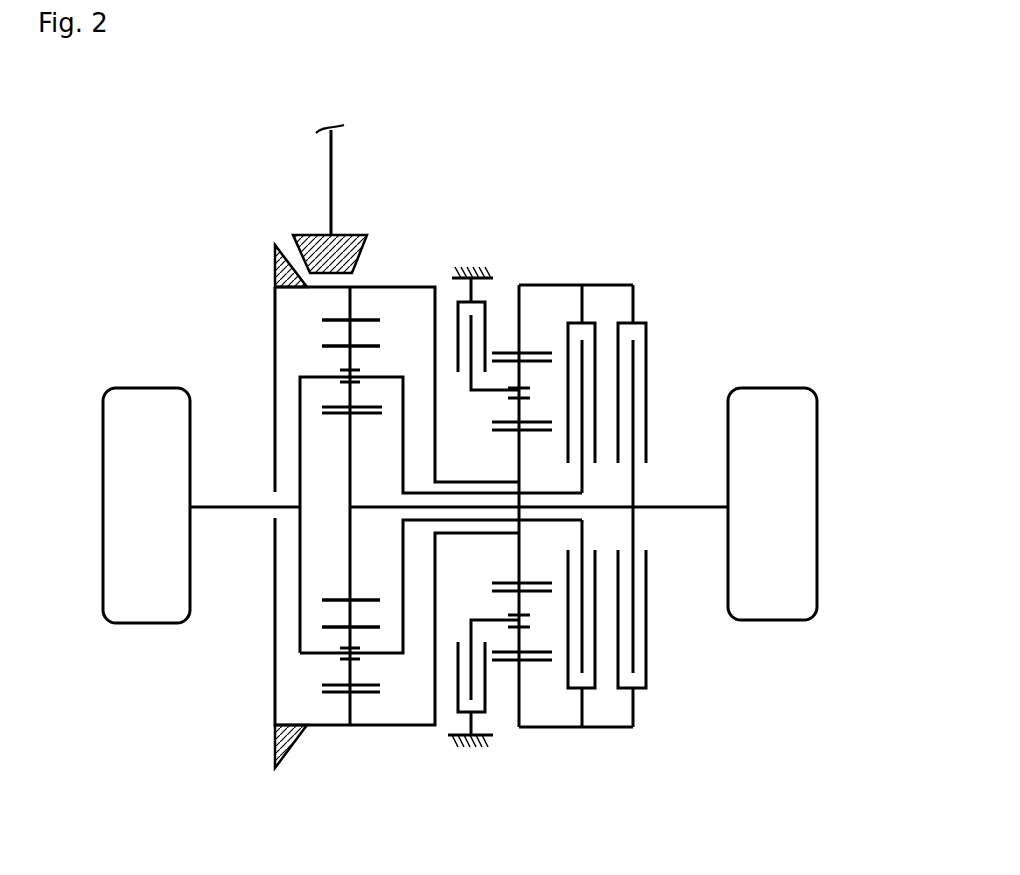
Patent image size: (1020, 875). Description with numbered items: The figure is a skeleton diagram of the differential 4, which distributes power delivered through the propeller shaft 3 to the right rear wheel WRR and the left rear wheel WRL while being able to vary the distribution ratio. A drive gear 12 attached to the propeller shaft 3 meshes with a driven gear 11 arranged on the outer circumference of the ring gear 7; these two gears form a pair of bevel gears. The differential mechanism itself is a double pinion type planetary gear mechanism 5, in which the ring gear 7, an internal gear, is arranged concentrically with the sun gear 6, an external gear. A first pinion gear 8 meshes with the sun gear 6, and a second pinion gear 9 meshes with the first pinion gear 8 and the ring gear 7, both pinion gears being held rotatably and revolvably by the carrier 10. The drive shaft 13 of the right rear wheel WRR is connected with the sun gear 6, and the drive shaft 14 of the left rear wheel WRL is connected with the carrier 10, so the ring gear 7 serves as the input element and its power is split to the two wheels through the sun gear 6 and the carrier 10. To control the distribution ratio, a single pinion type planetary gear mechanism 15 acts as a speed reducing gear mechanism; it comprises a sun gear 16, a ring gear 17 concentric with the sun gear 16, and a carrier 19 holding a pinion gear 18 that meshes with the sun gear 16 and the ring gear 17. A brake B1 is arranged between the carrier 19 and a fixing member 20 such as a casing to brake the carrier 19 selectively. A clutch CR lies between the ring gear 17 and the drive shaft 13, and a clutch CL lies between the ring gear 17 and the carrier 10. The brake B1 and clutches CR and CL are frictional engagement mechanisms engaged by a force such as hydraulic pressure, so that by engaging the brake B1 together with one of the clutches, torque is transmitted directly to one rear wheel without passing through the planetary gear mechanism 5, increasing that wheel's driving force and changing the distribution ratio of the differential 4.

The propeller shaft 3 is at (331, 167).
The differential 4 is at (600, 148).
The double pinion type planetary gear mechanism 5 is at (390, 270).
The sun gear 6 is at (333, 414).
The ring gear 7 is at (370, 320).
The first pinion gear 8 is at (338, 348).
The second pinion gear 9 is at (365, 686).
The carrier 10 is at (300, 388).
The driven gear 11 is at (275, 258).
The drive gear 12 is at (355, 235).
The drive shaft 13 is at (683, 510).
The drive shaft 14 is at (230, 510).
The single pinion type planetary gear mechanism 15 is at (545, 547).
The sun gear 16 is at (507, 582).
The ring gear 17 is at (502, 662).
The pinion gear 18 is at (536, 594).
The carrier 19 is at (490, 620).
The fixing member 20 is at (472, 750).
The brake B1 is at (485, 317).
The clutch CL is at (597, 325).
The clutch CR is at (647, 330).
The left rear wheel WRL is at (110, 390).
The right rear wheel WRR is at (807, 388).